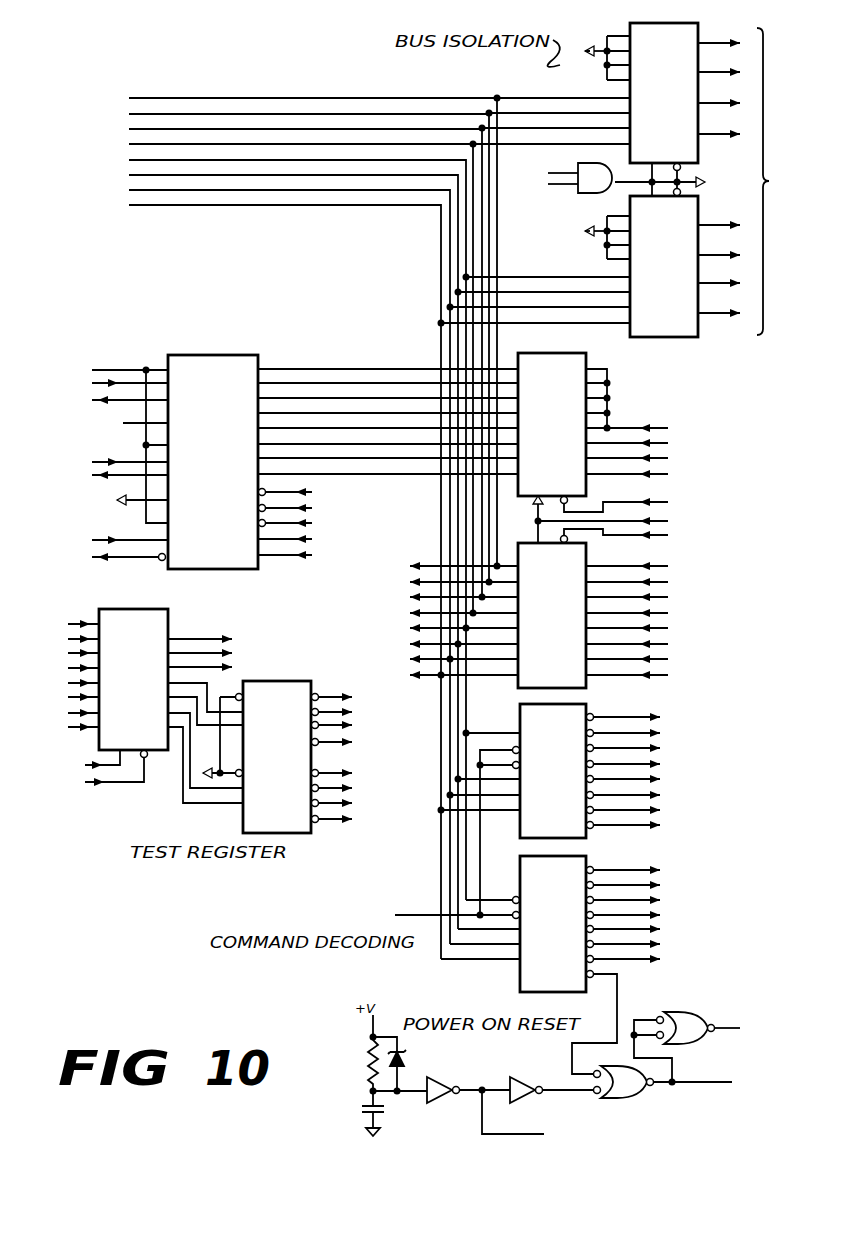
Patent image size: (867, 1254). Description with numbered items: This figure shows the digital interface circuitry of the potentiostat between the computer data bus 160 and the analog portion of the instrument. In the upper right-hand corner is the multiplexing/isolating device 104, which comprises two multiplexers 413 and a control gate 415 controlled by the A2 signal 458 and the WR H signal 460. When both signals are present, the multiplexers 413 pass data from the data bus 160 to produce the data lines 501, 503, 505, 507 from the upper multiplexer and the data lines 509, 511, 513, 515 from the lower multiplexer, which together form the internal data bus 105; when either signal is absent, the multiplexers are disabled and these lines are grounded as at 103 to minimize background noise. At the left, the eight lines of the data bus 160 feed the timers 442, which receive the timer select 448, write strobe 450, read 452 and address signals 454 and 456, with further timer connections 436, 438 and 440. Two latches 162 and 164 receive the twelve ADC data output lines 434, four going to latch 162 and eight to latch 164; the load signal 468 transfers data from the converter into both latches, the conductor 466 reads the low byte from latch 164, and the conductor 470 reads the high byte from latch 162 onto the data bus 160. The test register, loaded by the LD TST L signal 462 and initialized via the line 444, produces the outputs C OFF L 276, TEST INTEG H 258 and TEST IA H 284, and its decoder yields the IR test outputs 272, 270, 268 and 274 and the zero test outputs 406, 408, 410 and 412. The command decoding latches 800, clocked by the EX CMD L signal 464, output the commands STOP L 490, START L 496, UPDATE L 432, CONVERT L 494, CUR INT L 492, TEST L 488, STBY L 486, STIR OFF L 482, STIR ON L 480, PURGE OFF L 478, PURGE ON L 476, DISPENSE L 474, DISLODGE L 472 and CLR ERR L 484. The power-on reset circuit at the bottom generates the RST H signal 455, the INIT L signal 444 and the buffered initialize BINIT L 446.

The ground 103 is at (586, 48).
The multiplexing/isolating device 104 is at (573, 223).
The internal data bus 105 is at (782, 181).
The data bus 160 is at (129, 95).
The latch 162 is at (566, 389).
The latch 164 is at (566, 579).
The multiplexer 413 is at (653, 337).
The control gate 415 is at (668, 22).
The UPDATE L signal 432 is at (661, 748).
The data output lines of ADC 434 is at (675, 420).
The timer input lines 436 is at (86, 362).
The timer input lines 438 is at (86, 455).
The timer input/output lines 440 is at (86, 531).
The timers 442 is at (230, 450).
The INIT L signal 444 is at (113, 784).
The BINIT L signal 446 is at (740, 1028).
The TMR SEL L signal 448 is at (318, 492).
The WR STB L signal 450 is at (318, 508).
The RD L signal 452 is at (318, 524).
The A1 address signal 454 is at (318, 539).
The RST H signal 455 is at (505, 1134).
The A0 address signal 456 is at (314, 554).
The A2 address signal 458 is at (555, 186).
The WR H signal 460 is at (560, 173).
The LD TST L signal 462 is at (90, 765).
The EX CMD L signal 464 is at (425, 914).
The RD ADC LB L conductor 466 is at (665, 536).
The LD ADC DR H signal 468 is at (665, 522).
The RD ADC HB L conductor 470 is at (664, 502).
The DISLODGE L signal 472 is at (662, 943).
The DISPENSE L signal 474 is at (662, 928).
The PURGE ON L signal 476 is at (662, 915).
The PURGE OFF L signal 478 is at (661, 900).
The STIR ON L signal 480 is at (661, 885).
The STIR OFF L signal 482 is at (605, 868).
The CLR ERR L signal 484 is at (662, 959).
The STBY L signal 486 is at (662, 825).
The TEST L signal 488 is at (662, 810).
The STOP L signal 490 is at (661, 717).
The CUR INT L signal 492 is at (662, 779).
The CONVERT L signal 494 is at (662, 764).
The START L signal 496 is at (661, 733).
The data line 501 is at (709, 43).
The data line 503 is at (709, 73).
The data line 505 is at (709, 104).
The data line 507 is at (709, 135).
The data line 509 is at (709, 226).
The data line 511 is at (709, 256).
The data line 513 is at (709, 284).
The data line 515 is at (709, 314).
The command decoding latch 800 is at (520, 722).
The TEST INTEG H signal 258 is at (235, 651).
The IR TST1 L signal 268 is at (343, 725).
The IR TST2 L signal 270 is at (343, 712).
The IR TST3 L signal 272 is at (338, 697).
The IR TST OFF L signal 274 is at (343, 742).
The C OFF L signal 276 is at (210, 636).
The TEST IA H signal 284 is at (235, 666).
The ZT3 L signal 406 is at (343, 773).
The ZT2 L signal 408 is at (343, 788).
The ZT1 L signal 410 is at (343, 803).
The ZT OFF L signal 412 is at (343, 819).